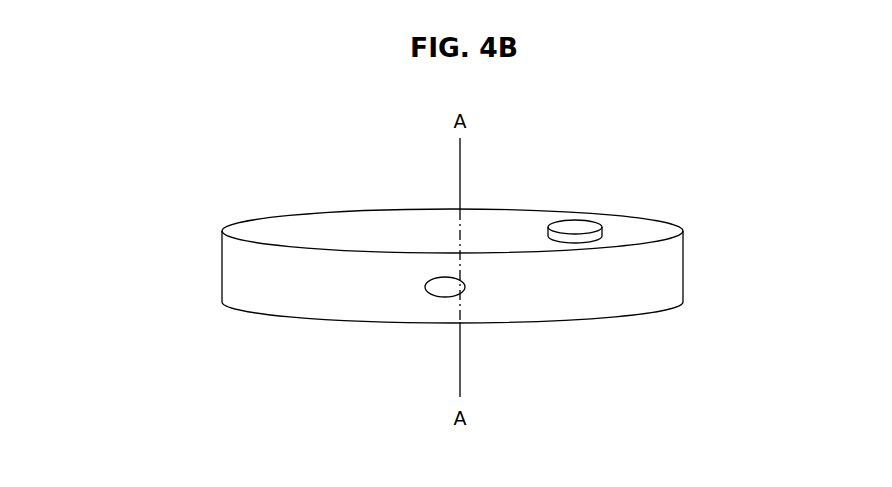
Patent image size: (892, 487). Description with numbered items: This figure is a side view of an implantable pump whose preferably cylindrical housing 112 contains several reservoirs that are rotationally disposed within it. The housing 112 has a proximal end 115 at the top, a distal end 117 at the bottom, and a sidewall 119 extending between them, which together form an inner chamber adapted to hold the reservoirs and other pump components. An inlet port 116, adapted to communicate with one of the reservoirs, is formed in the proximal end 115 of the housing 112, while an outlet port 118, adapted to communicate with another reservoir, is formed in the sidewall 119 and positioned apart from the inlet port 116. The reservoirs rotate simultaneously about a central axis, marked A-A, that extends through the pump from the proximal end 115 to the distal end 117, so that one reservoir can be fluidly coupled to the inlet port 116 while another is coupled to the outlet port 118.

The housing 112 is at (242, 264).
The proximal end 115 is at (333, 228).
The inlet port 116 is at (582, 227).
The distal end 117 is at (313, 352).
The outlet port 118 is at (443, 283).
The sidewall 119 is at (287, 309).